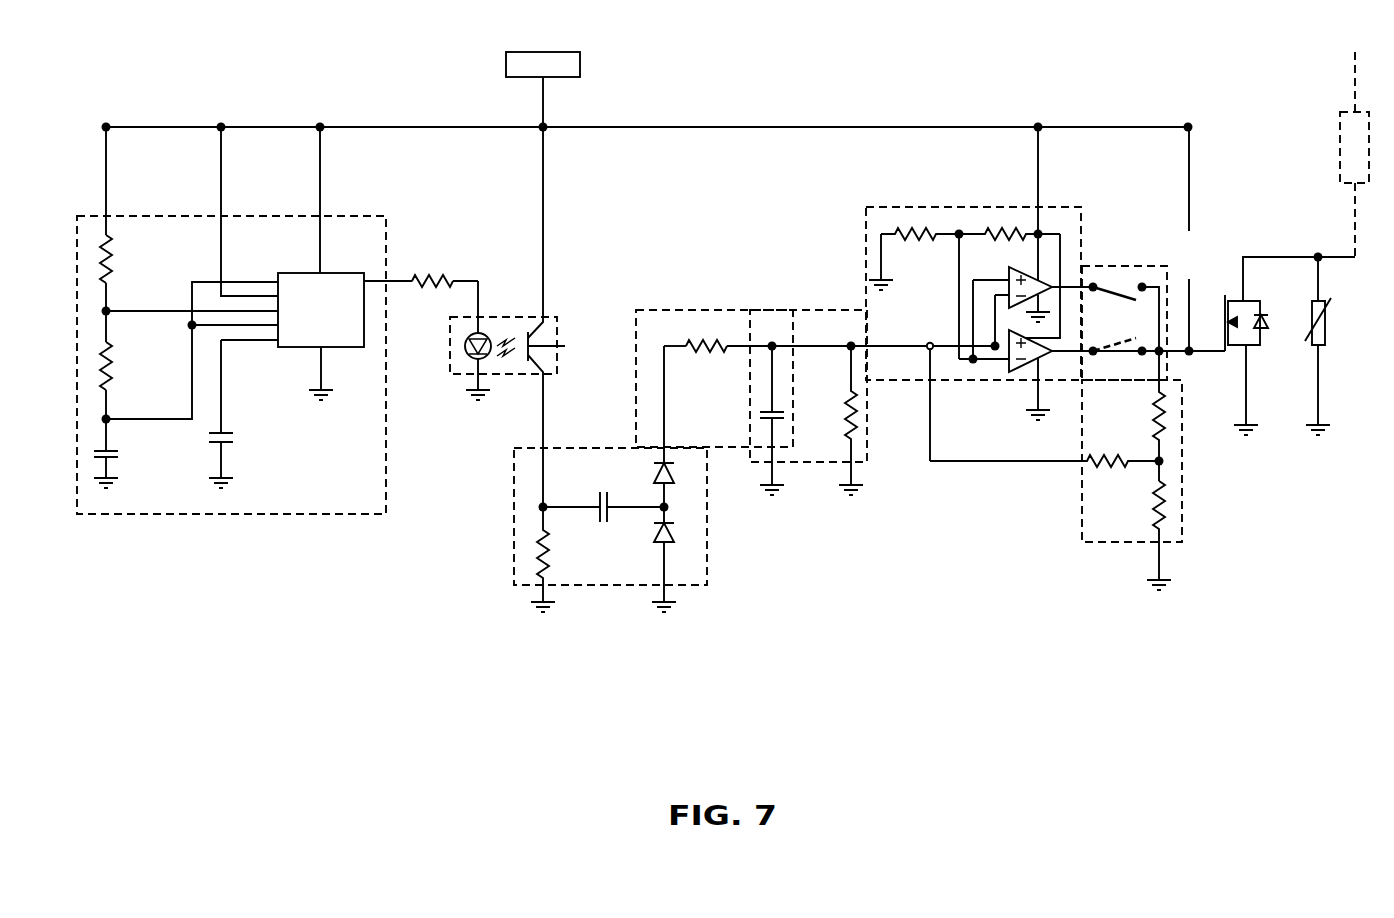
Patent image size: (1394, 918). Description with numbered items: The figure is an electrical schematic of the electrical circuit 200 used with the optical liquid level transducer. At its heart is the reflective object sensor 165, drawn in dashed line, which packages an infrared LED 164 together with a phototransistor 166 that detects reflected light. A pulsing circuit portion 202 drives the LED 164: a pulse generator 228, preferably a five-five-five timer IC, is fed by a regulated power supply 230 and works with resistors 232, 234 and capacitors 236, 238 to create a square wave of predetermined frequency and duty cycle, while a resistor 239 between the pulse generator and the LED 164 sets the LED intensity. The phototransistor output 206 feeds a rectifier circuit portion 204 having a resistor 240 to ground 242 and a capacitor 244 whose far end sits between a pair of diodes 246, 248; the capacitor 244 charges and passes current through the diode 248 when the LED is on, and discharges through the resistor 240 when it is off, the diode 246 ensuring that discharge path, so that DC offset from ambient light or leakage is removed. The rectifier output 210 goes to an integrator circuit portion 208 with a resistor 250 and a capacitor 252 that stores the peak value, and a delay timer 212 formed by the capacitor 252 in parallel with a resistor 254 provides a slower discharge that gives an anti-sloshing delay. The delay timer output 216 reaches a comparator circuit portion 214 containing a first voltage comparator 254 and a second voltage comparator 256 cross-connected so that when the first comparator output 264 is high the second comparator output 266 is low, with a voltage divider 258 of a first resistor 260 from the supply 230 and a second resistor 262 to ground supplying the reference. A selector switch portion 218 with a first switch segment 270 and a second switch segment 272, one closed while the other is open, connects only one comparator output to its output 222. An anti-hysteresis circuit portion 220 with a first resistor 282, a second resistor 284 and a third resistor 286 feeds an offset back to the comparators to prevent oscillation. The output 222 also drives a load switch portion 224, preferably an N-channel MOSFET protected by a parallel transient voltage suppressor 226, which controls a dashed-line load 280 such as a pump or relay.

The electrical circuit 200 is at (818, 108).
The pulsing circuit portion 202 is at (350, 215).
The rectifier circuit portion 204 is at (514, 548).
The phototransistor output 206 is at (543, 433).
The integrator circuit portion 208 is at (693, 310).
The output of the rectifier circuit portion 210 is at (663, 421).
The delay timer 212 is at (818, 310).
The comparator circuit portion 214 is at (866, 236).
The output of the delay timer 216 is at (909, 343).
The selector switch portion 218 is at (1112, 265).
The anti-hysteresis circuit portion 220 is at (1082, 486).
The output of the selector switch portion 222 is at (1176, 354).
The load switch portion 224 is at (1251, 347).
The transient voltage suppressor 226 is at (1331, 337).
The pulse generator 228 is at (293, 359).
The regulated power supply 230 is at (581, 62).
The resistor 232 is at (113, 263).
The resistor 234 is at (122, 368).
The capacitor 236 is at (120, 453).
The capacitor 238 is at (236, 436).
The resistor 239 is at (424, 268).
The resistor 240 is at (553, 548).
The ground 242 is at (530, 603).
The capacitor 244 is at (598, 500).
The diode 246 is at (677, 536).
The diode 248 is at (677, 471).
The resistor 250 is at (712, 360).
The capacitor 252 is at (780, 410).
The resistor 254 is at (858, 416).
The second voltage comparator 256 is at (1012, 272).
The voltage divider 258 is at (956, 226).
The first resistor 260 is at (1004, 222).
The second resistor 262 is at (917, 248).
The output of the first comparator 264 is at (1064, 356).
The output of the second comparator 266 is at (1068, 284).
The first switch segment 270 is at (1101, 355).
The second switch segment 272 is at (1125, 300).
The load 280 is at (1340, 151).
The first resistor 282 is at (1170, 418).
The second resistor 284 is at (1170, 500).
The third resistor 286 is at (1111, 473).
The LED 164 is at (465, 346).
The reflective object sensor 165 is at (560, 322).
The phototransistor 166 is at (565, 346).